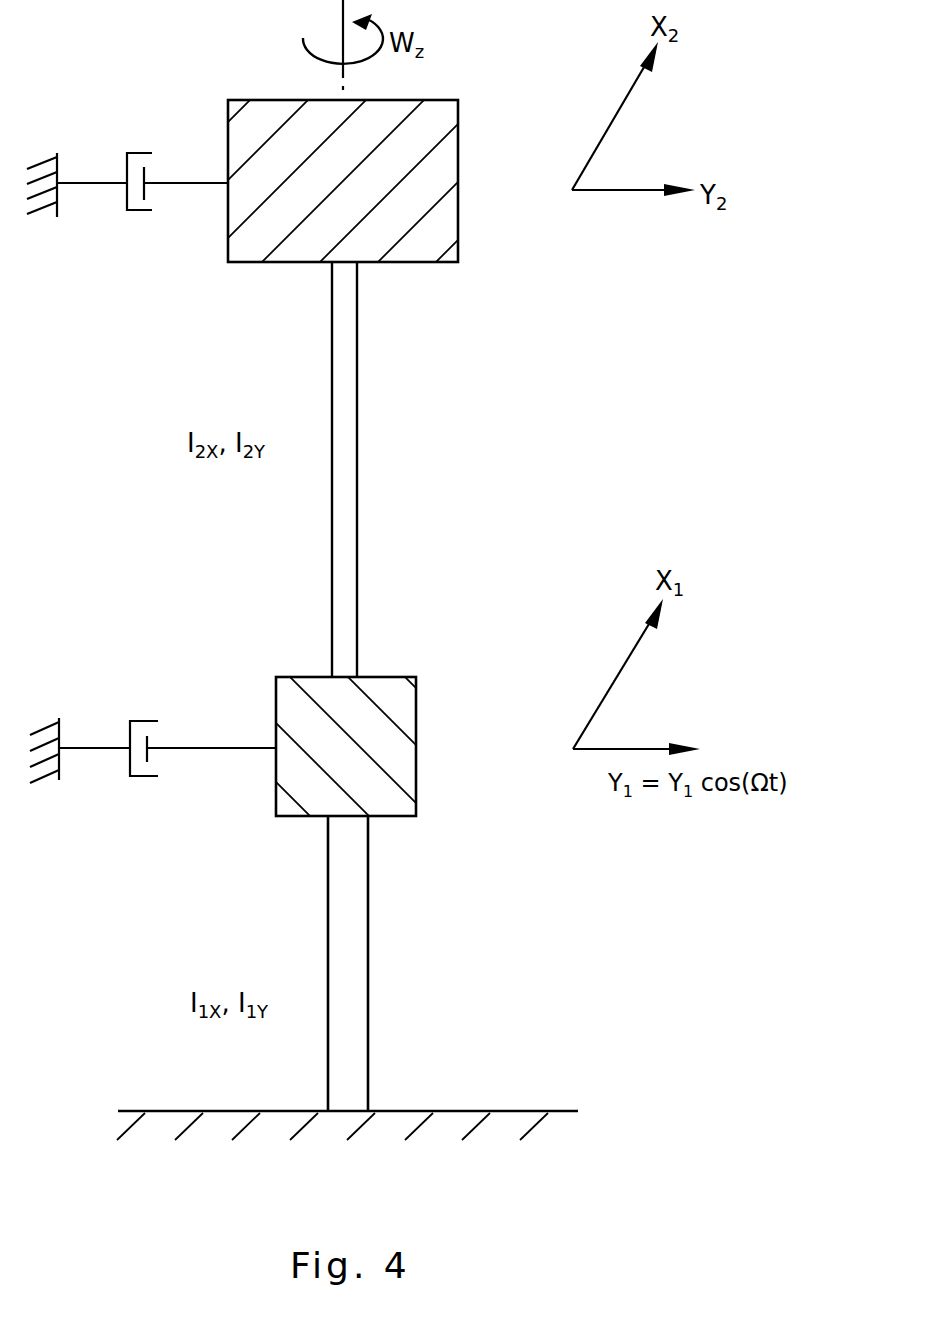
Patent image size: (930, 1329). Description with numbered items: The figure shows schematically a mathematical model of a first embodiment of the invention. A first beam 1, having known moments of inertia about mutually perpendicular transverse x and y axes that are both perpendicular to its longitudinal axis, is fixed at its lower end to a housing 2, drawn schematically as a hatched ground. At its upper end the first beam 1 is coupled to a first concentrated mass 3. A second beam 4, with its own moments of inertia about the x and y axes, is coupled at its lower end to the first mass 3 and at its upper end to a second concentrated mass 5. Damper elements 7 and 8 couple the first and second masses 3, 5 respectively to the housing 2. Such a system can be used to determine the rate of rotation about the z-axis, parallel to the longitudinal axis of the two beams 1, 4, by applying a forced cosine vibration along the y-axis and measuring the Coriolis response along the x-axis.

The first beam 1 is at (368, 1000).
The housing 2 is at (461, 1110).
The first mass 3 is at (416, 766).
The second beam 4 is at (357, 446).
The second mass 5 is at (458, 191).
The damper element 7 is at (130, 768).
The damper element 8 is at (127, 200).